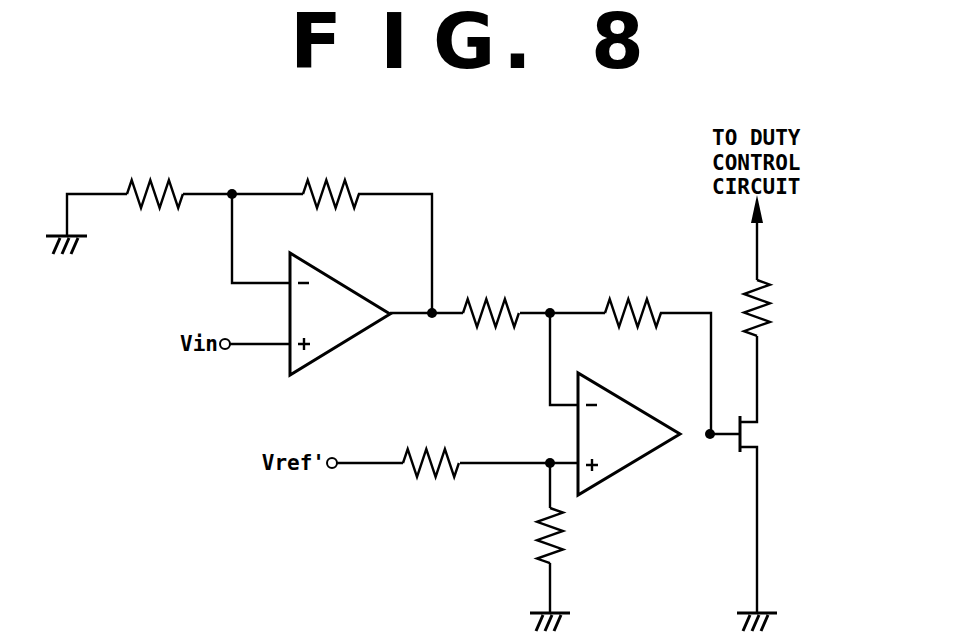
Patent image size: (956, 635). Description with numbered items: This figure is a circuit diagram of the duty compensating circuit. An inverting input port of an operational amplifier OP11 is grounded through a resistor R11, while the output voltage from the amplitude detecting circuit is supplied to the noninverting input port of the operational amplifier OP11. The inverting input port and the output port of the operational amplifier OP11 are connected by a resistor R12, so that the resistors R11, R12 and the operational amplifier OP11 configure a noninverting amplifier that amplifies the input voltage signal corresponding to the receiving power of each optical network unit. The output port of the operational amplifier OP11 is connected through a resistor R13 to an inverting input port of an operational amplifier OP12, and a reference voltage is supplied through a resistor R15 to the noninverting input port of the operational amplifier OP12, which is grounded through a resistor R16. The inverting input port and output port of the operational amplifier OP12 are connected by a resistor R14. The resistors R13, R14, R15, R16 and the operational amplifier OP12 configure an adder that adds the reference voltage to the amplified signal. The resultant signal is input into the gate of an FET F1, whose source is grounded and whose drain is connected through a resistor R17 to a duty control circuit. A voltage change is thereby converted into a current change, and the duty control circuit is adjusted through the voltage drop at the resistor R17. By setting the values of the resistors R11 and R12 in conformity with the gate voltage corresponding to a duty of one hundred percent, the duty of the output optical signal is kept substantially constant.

The resistor R11 is at (155, 181).
The resistor R12 is at (331, 181).
The resistor R13 is at (491, 301).
The resistor R14 is at (633, 301).
The resistor R15 is at (431, 450).
The resistor R16 is at (571, 535).
The resistor R17 is at (779, 308).
The operational amplifier OP11 is at (346, 314).
The operational amplifier OP12 is at (635, 434).
The FET (field effect transistor) F1 is at (763, 434).